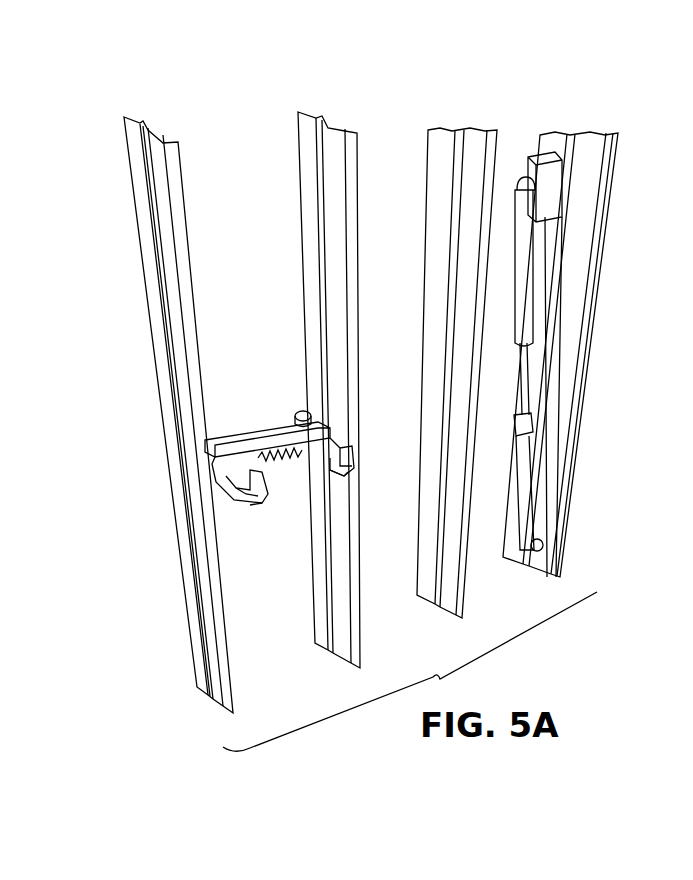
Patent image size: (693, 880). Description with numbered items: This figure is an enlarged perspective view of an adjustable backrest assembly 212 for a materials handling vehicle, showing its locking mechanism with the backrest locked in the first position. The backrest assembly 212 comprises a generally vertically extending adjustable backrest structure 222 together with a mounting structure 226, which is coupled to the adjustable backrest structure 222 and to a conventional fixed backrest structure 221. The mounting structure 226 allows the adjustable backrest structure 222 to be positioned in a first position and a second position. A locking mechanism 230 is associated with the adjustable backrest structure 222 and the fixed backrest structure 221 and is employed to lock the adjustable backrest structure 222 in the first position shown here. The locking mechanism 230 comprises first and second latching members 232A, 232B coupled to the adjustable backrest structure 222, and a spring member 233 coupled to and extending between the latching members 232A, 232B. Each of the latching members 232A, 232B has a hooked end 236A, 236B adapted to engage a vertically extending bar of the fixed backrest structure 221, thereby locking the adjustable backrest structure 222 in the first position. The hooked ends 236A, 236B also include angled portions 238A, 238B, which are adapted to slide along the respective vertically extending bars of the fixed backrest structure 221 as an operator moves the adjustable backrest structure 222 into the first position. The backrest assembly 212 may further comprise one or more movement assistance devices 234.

The adjustable backrest assembly 212 is at (377, 388).
The fixed backrest structure 221 is at (180, 225).
The adjustable backrest structure 222 is at (150, 212).
The mounting structure 226 is at (557, 487).
The locking mechanism 230 is at (262, 418).
The first latching member 232A is at (232, 497).
The second latching member 232B is at (358, 462).
The spring member 233 is at (280, 482).
The movement assistance device 234 is at (535, 292).
The hooked end 236A is at (218, 506).
The hooked end 236B is at (356, 456).
The angled portion 238A is at (260, 498).
The angled portion 238B is at (360, 458).